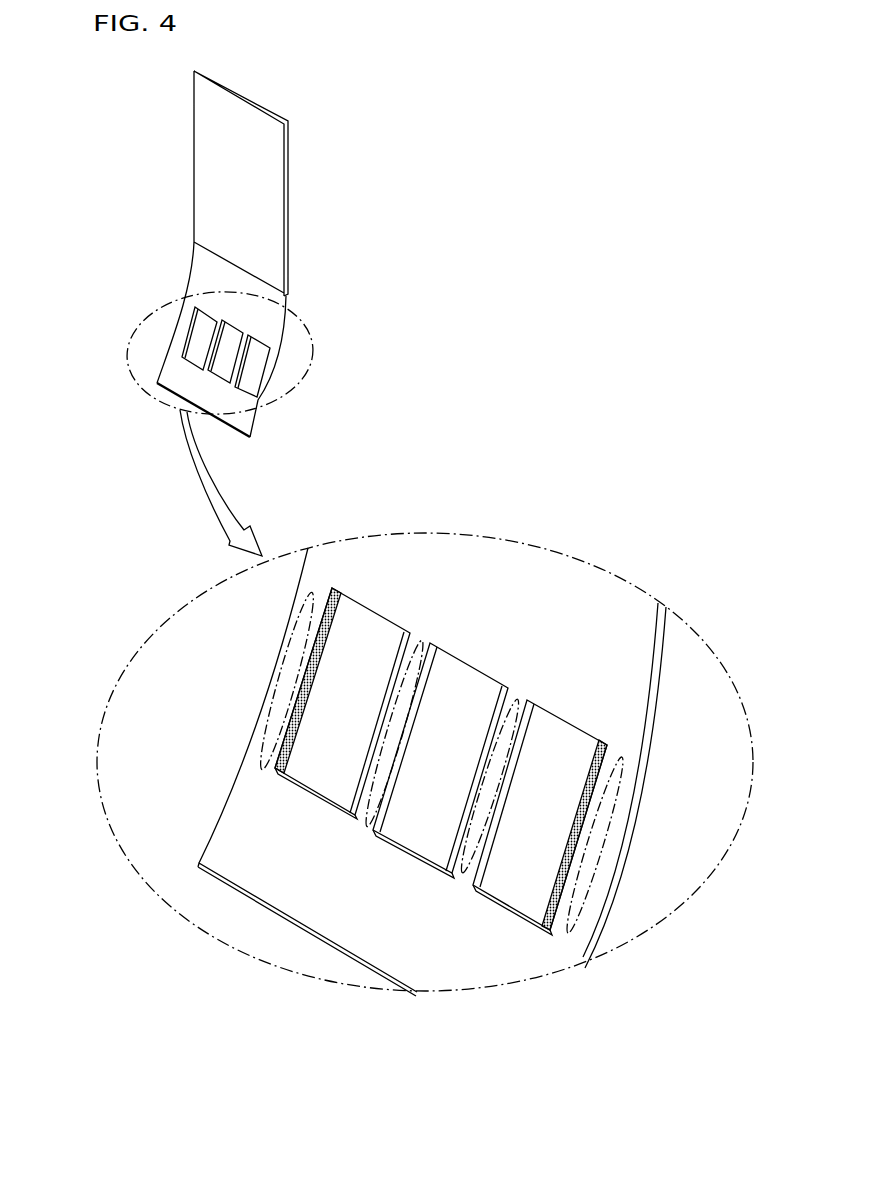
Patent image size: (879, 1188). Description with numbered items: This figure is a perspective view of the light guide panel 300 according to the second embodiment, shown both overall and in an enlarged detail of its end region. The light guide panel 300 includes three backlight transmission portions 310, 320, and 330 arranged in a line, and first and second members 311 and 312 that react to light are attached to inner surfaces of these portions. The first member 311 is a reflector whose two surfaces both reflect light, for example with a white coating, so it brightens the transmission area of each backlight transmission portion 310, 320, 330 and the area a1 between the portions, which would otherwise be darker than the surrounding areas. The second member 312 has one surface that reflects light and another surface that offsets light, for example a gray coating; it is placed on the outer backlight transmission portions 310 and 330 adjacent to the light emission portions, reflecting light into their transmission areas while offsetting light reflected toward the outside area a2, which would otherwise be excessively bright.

The light guide panel 300 is at (325, 170).
The backlight transmission portion 310 is at (198, 346).
The backlight transmission portion 320 is at (225, 362).
The backlight transmission portion 330 is at (254, 379).
The first member 311 is at (380, 737).
The second member 312 is at (323, 660).
The area between the backlight transmission portions a1 is at (420, 645).
The outside area a2 is at (622, 757).